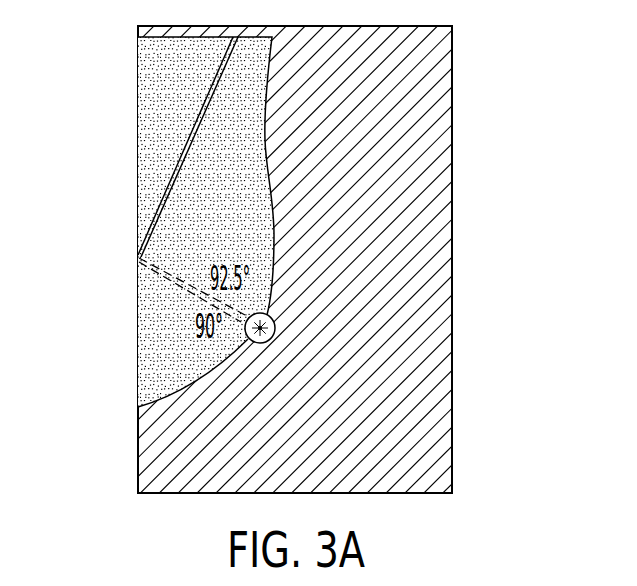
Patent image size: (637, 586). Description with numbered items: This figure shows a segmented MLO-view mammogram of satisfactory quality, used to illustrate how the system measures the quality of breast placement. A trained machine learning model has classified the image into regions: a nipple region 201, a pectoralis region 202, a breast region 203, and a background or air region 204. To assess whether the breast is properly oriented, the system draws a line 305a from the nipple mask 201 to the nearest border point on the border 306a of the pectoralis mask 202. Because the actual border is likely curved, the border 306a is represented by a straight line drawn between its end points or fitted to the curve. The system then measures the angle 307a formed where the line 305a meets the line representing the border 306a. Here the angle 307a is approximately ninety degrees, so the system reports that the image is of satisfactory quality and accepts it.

The nipple region 201 is at (274, 322).
The pectoralis region 202 is at (142, 87).
The breast region 203 is at (157, 373).
The background or air region 204 is at (433, 317).
The line 305a is at (145, 263).
The border 306a is at (157, 173).
The angle 307a is at (178, 236).